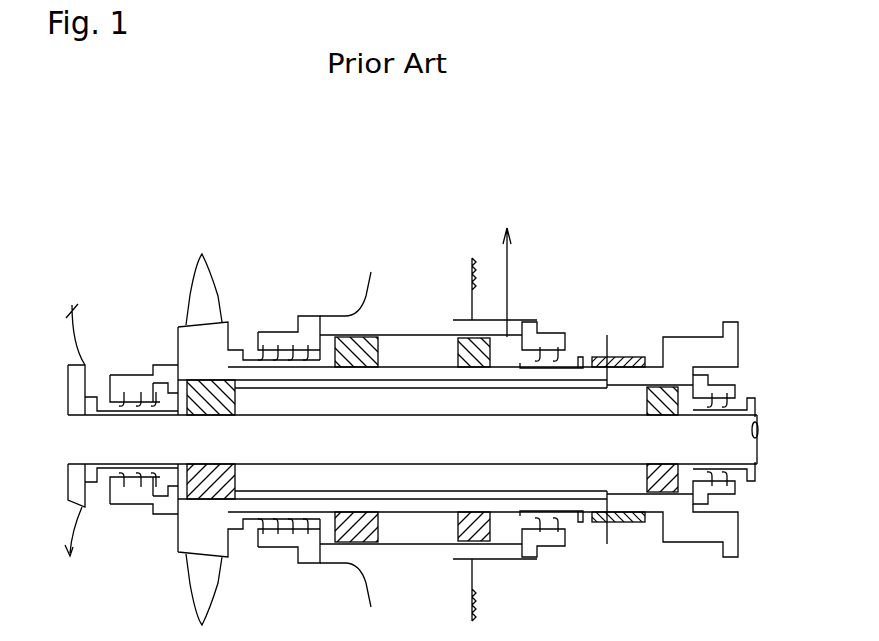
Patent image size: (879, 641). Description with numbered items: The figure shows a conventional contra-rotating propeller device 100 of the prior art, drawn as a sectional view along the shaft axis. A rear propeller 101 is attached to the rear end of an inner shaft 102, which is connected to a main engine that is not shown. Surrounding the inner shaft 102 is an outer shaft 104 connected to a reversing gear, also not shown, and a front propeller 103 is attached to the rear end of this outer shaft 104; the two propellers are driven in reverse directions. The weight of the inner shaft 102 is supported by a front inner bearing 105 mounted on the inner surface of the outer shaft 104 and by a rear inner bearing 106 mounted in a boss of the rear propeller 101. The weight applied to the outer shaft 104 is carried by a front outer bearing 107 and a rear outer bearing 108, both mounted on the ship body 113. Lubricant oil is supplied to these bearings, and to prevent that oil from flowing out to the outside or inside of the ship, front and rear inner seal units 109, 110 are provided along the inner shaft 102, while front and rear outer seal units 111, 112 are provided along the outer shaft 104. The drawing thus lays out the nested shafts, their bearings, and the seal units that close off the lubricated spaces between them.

The contra-rotating propeller device 100 is at (271, 177).
The rear propeller 101 is at (76, 312).
The inner shaft 102 is at (153, 443).
The front propeller 103 is at (210, 274).
The outer shaft 104 is at (408, 376).
The front inner bearing 105 is at (657, 386).
The rear inner bearing 106 is at (236, 398).
The front outer bearing 107 is at (490, 338).
The rear outer bearing 108 is at (346, 338).
The front inner seal unit 109 is at (736, 386).
The rear inner seal unit 110 is at (168, 387).
The front outer seal unit 111 is at (560, 335).
The rear outer seal unit 112 is at (273, 333).
The ship body 113 is at (366, 292).